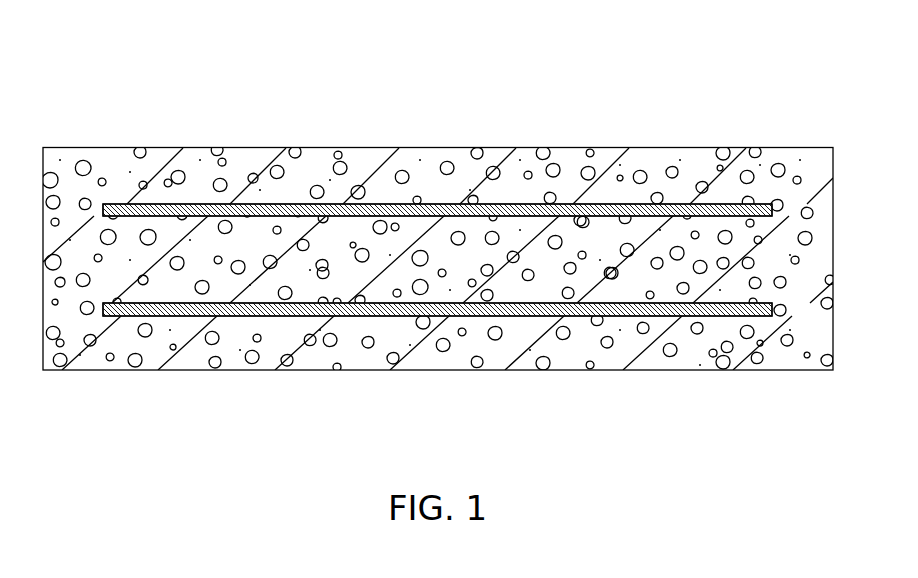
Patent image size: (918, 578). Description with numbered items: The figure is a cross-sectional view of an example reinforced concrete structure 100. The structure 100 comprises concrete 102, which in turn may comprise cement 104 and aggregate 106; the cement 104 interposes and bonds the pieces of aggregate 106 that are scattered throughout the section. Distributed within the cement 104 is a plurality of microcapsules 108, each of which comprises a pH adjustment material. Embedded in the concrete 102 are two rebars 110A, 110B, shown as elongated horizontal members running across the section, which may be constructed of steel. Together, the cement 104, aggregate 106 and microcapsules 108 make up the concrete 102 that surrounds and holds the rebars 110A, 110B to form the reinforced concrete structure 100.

The reinforced concrete structure 100 is at (713, 65).
The concrete 102 is at (772, 157).
The cement 104 is at (433, 157).
The aggregate 106 is at (178, 177).
The microcapsules 108 is at (312, 157).
The rebar 110A is at (128, 205).
The rebar 110B is at (130, 316).